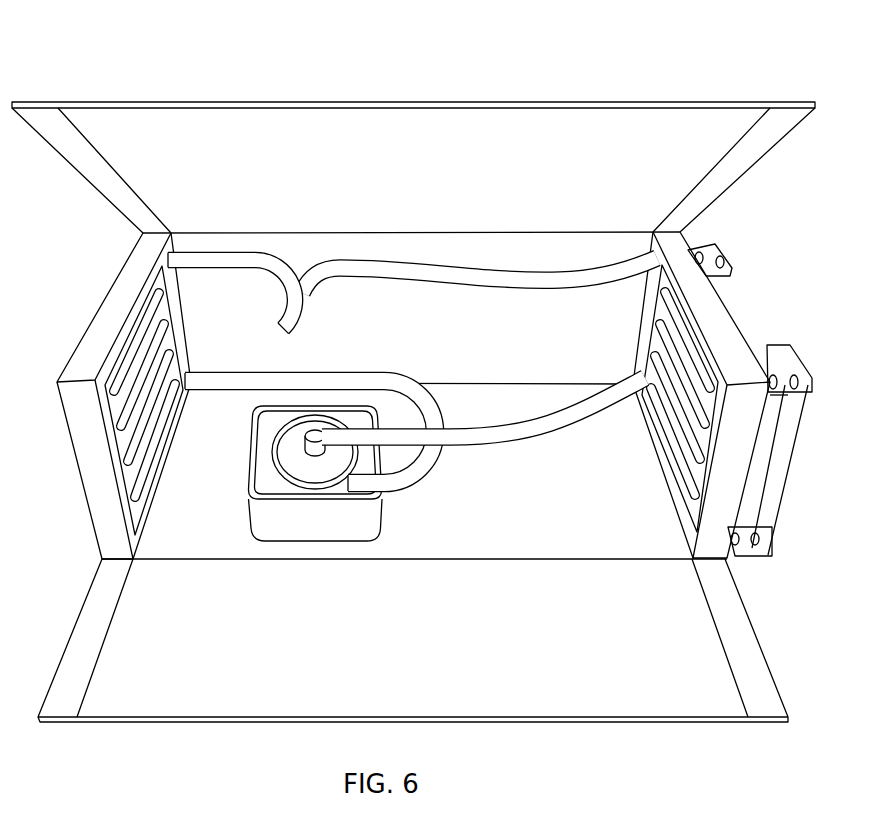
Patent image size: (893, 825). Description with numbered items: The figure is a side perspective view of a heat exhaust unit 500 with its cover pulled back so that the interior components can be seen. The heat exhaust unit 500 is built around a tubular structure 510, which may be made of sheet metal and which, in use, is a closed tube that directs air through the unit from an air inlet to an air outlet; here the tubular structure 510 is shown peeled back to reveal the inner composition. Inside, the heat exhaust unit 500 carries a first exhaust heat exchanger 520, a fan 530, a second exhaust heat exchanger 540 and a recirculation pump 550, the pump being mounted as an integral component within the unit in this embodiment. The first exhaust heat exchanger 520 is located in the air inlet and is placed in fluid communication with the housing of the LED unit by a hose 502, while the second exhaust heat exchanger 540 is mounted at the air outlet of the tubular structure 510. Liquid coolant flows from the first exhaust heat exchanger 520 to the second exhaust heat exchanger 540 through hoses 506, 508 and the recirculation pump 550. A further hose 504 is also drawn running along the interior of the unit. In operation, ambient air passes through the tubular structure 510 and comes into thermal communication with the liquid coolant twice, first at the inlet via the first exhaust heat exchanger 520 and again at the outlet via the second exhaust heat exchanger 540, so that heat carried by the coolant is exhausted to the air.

The heat exhaust unit 500 is at (654, 39).
The hose 502 is at (546, 282).
The curved coolant pipe 504 is at (243, 263).
The hose 506 is at (548, 415).
The hose 508 is at (336, 380).
The tubular structure 510 is at (712, 647).
The first exhaust heat exchanger 520 is at (738, 347).
The fan 530 is at (737, 281).
The second exhaust heat exchanger 540 is at (85, 344).
The recirculation pump 550 is at (367, 515).